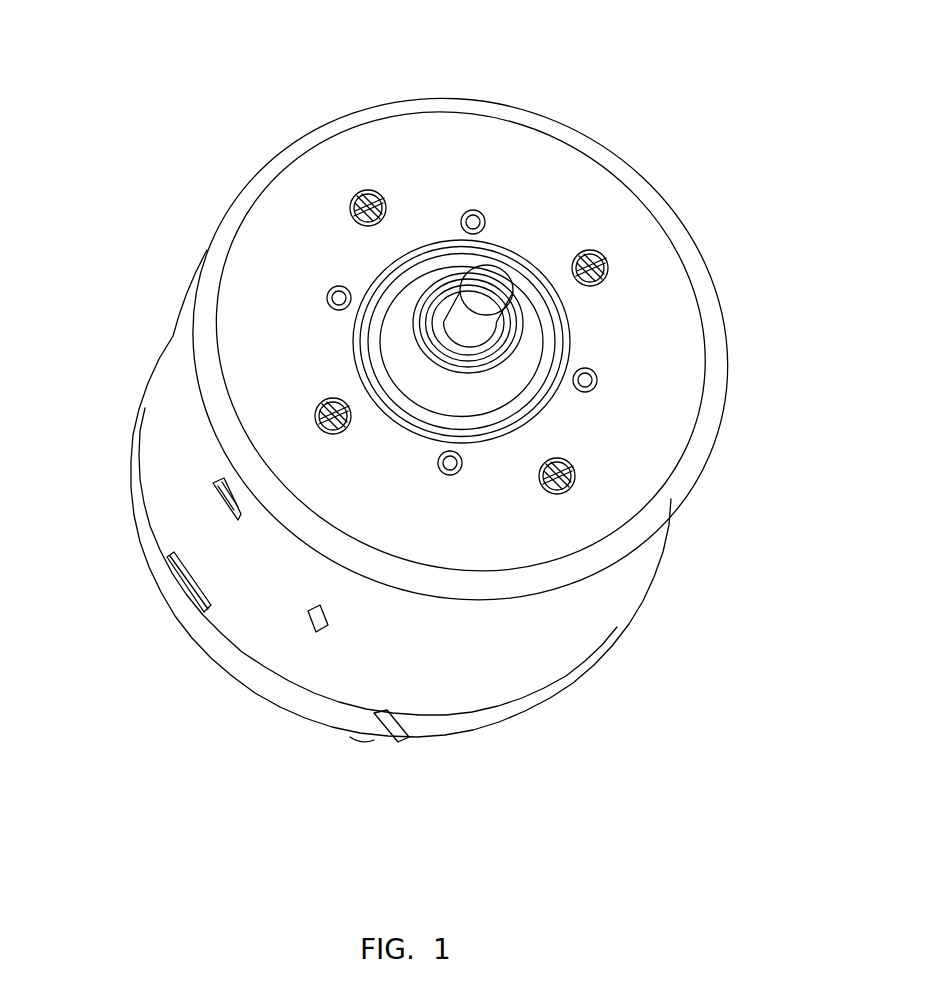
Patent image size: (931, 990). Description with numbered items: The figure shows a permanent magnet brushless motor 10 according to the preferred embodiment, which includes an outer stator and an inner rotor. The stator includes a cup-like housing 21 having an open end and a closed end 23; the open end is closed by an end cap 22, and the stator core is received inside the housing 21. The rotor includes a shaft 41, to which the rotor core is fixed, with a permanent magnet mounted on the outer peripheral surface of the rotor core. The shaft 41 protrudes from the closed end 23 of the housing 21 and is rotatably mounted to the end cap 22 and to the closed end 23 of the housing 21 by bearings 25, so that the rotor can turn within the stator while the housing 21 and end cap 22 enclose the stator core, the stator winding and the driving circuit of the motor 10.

The permanent magnet brushless motor 10 is at (303, 68).
The housing 21 is at (163, 366).
The end cap 22 is at (200, 633).
The closed end 23 is at (651, 260).
The bearings 25 is at (520, 372).
The shaft 41 is at (484, 290).